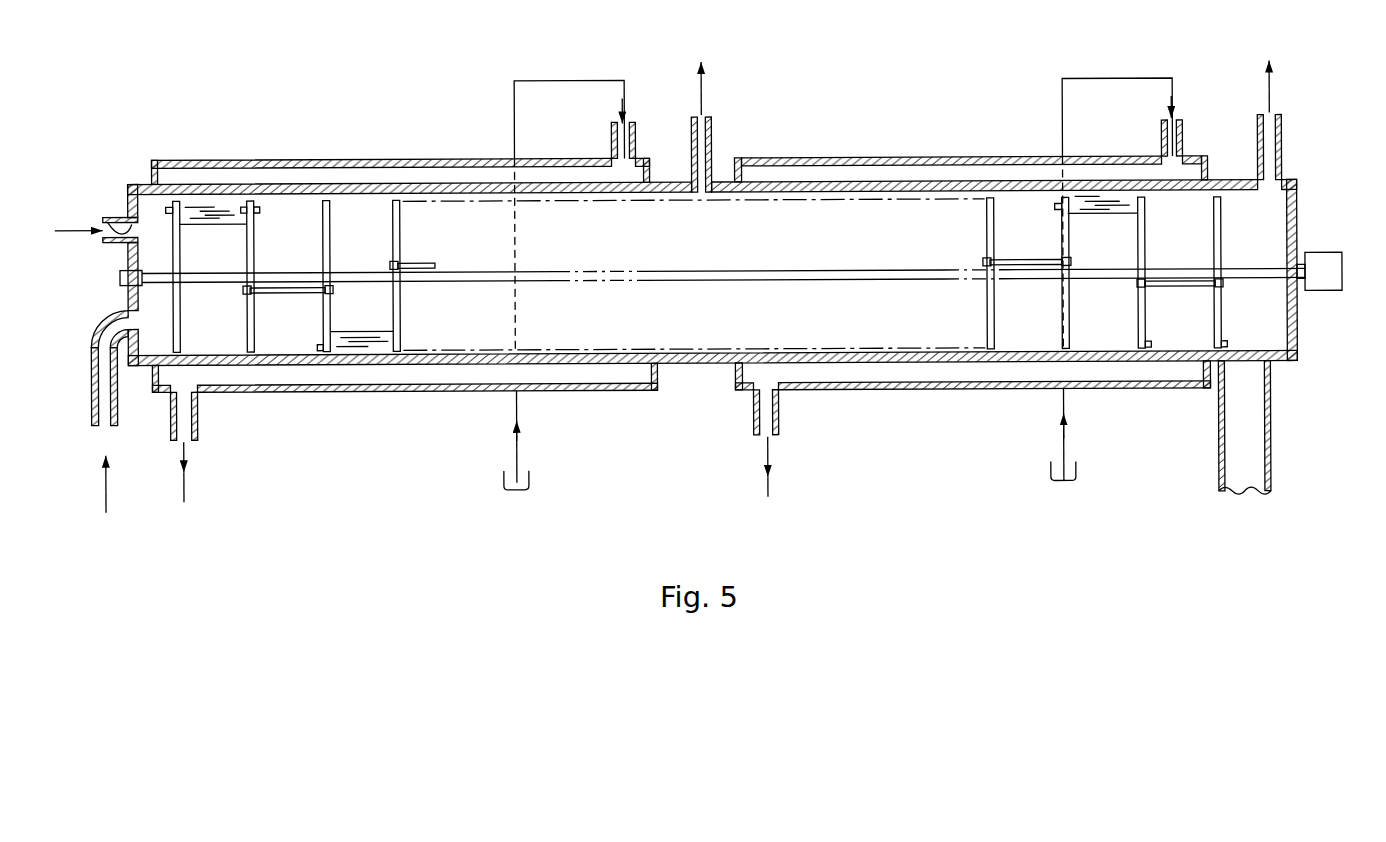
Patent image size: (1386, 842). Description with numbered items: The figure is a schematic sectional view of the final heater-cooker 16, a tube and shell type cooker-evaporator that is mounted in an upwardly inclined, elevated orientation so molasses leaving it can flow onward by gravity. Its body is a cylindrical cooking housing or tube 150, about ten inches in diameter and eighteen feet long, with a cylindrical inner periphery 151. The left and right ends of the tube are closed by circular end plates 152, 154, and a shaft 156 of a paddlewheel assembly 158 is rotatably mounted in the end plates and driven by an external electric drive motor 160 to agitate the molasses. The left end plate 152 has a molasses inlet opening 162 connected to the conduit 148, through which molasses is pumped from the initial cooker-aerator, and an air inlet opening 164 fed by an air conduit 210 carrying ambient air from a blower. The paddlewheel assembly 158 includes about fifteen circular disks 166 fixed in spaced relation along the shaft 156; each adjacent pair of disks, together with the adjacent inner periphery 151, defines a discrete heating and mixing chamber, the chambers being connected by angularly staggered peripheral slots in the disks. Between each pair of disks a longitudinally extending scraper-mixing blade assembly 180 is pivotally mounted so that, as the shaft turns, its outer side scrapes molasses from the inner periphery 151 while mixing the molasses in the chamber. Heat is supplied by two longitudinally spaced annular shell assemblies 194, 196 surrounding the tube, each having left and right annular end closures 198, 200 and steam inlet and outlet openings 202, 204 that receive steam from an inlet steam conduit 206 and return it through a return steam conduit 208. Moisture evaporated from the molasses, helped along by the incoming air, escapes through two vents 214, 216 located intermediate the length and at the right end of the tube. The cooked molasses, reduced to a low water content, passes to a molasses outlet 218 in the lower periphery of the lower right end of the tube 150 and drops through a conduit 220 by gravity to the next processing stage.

The final heater-cooker 16 is at (948, 88).
The conduit 148 is at (90, 236).
The cooking housing or tube 150 is at (707, 365).
The inner periphery 151 is at (1007, 340).
The left end plate 152 is at (132, 182).
The right end plate 154 is at (1298, 207).
The shaft 156 is at (418, 283).
The paddlewheel assembly 158 is at (419, 243).
The electric drive motor 160 is at (1318, 255).
The molasses inlet opening 162 is at (102, 217).
The air inlet opening 164 is at (127, 312).
The circular disks 166 is at (245, 262).
The scraper-mixing blade assembly 180 is at (238, 224).
The annular shell assembly 194 is at (250, 157).
The annular shell assembly 196 is at (435, 392).
The left annular end closure 198 is at (152, 166).
The right annular end closure 200 is at (651, 176).
The steam inlet opening 202 is at (611, 142).
The steam outlet opening 204 is at (196, 398).
The inlet steam conduit 206 is at (514, 131).
The return steam conduit 208 is at (197, 432).
The air conduit 210 is at (91, 383).
The vent 214 is at (712, 137).
The vent 216 is at (1283, 153).
The molasses outlet 218 is at (1264, 364).
The conduit 220 is at (1217, 486).